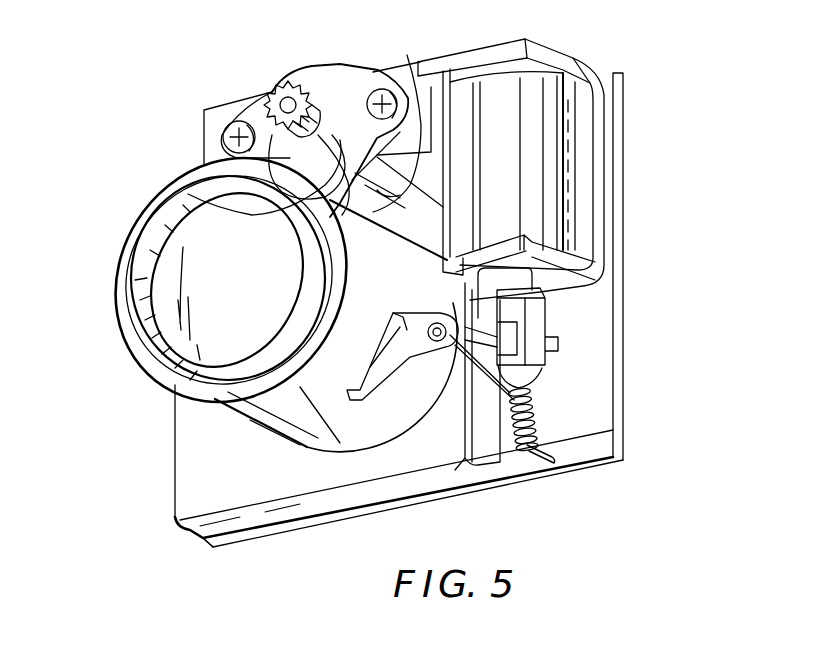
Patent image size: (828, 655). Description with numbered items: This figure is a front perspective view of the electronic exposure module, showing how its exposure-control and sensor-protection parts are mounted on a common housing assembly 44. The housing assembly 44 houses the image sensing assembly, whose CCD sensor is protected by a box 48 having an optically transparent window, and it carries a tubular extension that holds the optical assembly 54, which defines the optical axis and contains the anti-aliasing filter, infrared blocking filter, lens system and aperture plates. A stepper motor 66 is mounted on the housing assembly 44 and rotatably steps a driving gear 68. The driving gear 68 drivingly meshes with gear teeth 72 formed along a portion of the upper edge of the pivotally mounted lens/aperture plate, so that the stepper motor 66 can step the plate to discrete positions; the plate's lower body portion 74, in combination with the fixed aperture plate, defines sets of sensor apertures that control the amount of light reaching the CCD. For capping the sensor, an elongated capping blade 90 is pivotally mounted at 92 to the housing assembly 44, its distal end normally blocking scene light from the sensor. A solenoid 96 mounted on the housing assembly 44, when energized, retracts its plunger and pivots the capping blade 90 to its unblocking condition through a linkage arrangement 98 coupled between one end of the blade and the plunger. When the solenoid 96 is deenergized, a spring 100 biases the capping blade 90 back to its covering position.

The housing assembly 44 is at (582, 442).
The box 48 is at (270, 513).
The optical assembly 54 is at (100, 285).
The stepper motor 66 is at (407, 55).
The driving gear 68 is at (273, 93).
The gear teeth 72 is at (185, 183).
The lower body portion 74 is at (290, 215).
The capping blade 90 is at (407, 343).
The pivot 92 is at (417, 343).
The solenoid 96 is at (547, 157).
The linkage arrangement 98 is at (537, 320).
The spring 100 is at (537, 410).